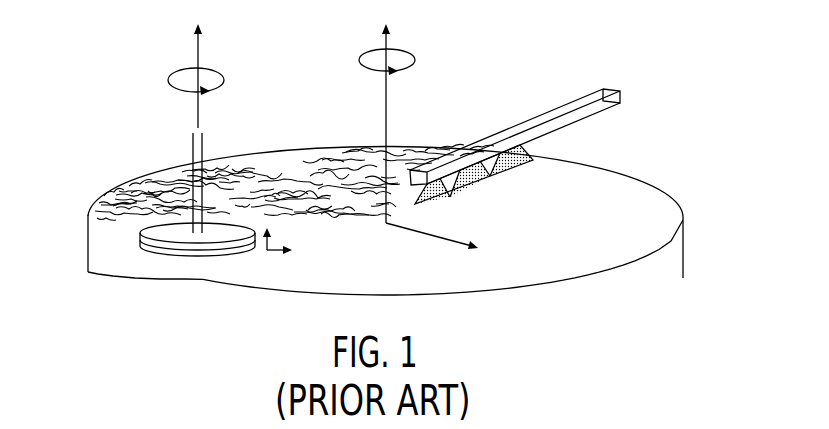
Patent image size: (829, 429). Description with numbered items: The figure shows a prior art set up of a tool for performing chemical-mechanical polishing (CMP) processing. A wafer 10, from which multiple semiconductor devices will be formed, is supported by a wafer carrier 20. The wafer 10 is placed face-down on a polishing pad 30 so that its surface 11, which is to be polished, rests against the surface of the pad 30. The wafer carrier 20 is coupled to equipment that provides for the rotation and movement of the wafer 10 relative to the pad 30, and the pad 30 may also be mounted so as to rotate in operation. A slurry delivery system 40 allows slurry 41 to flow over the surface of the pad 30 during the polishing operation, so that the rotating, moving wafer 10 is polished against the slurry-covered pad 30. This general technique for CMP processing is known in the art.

The wafer 10 is at (160, 258).
The surface 11 is at (193, 265).
The wafer carrier 20 is at (177, 225).
The polishing pad 30 is at (542, 214).
The slurry delivery system 40 is at (483, 133).
The slurry 41 is at (327, 164).